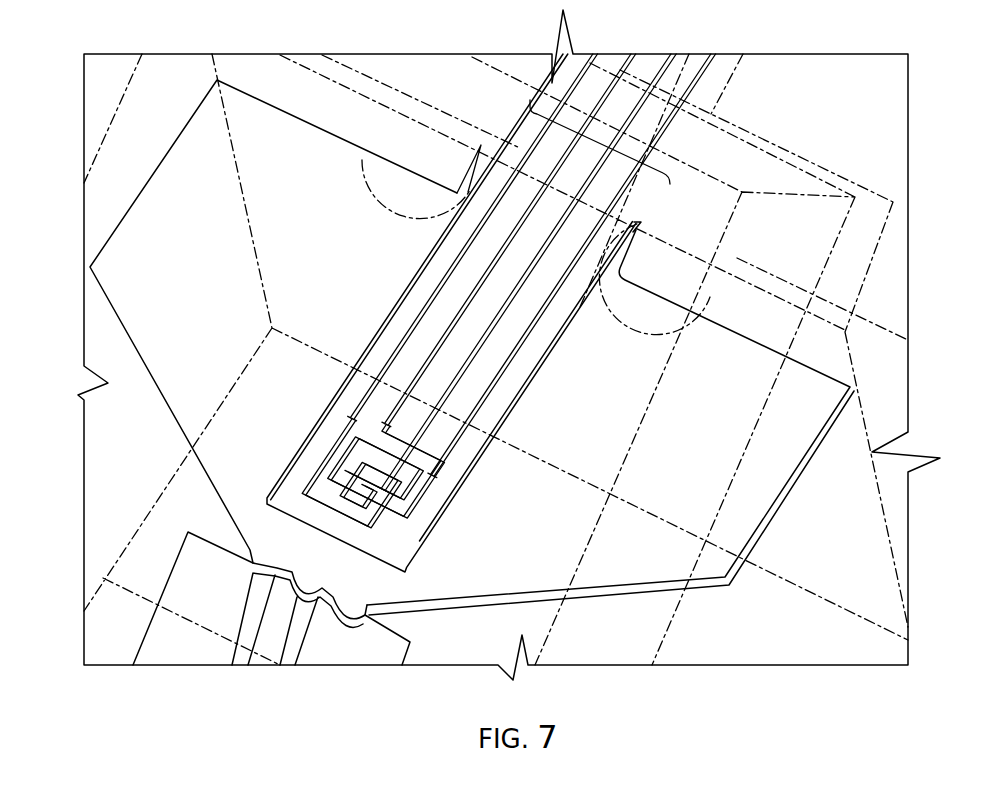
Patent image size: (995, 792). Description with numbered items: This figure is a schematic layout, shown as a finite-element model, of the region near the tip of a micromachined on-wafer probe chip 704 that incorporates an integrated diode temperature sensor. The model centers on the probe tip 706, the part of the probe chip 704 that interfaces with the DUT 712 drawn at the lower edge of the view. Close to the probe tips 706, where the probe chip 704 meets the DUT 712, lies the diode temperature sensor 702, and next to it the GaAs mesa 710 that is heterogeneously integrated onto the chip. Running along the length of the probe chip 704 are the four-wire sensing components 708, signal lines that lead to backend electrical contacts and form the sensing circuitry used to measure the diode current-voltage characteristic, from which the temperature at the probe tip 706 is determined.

The diode temperature sensor 702 is at (333, 493).
The probe chip 704 is at (773, 483).
The probe tip 706 is at (248, 622).
The four-wire sensing components 708 is at (600, 130).
The GaAs mesa 710 is at (372, 503).
The DUT 712 is at (337, 647).